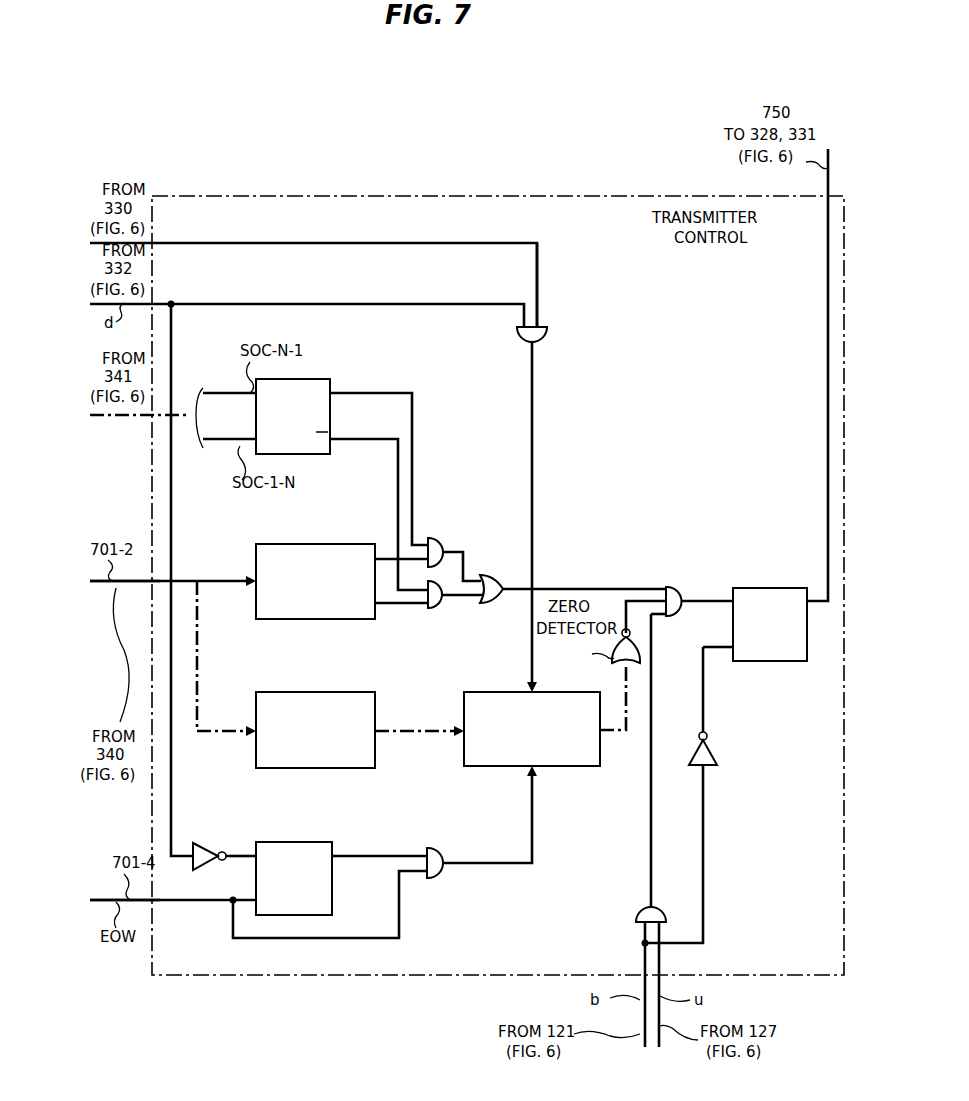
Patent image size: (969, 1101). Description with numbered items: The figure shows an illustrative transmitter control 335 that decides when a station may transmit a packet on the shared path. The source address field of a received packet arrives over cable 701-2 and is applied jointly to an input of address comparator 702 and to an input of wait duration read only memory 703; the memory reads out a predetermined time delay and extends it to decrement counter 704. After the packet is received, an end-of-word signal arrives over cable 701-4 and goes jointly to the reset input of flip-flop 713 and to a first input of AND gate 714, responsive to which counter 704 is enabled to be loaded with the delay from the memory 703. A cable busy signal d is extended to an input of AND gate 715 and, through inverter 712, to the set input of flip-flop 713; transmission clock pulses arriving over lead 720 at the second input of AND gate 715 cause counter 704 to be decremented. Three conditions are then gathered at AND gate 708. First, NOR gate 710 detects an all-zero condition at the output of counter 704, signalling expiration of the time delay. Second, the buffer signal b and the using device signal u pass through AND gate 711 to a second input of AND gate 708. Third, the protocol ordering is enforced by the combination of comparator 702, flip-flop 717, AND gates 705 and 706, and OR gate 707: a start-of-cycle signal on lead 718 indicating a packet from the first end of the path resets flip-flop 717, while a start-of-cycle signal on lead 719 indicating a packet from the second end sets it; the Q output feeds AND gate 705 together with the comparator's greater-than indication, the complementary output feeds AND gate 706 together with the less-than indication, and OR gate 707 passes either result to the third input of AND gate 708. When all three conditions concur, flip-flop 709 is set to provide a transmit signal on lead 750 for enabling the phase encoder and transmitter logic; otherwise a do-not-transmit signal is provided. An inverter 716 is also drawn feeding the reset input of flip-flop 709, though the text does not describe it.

The transmitter control 335 is at (565, 196).
The lead 750 is at (795, 352).
The lead 720 is at (538, 292).
The AND gate 715 is at (547, 336).
The flip-flop 717 is at (326, 380).
The lead 719 is at (215, 394).
The lead 718 is at (215, 442).
The address comparator 702 is at (316, 544).
The AND gate 705 is at (436, 538).
The AND gate 706 is at (438, 608).
The OR gate 707 is at (490, 576).
The AND gate 708 is at (682, 590).
The flip-flop 709 is at (768, 588).
The NOR gate 710 is at (614, 648).
The wait duration read only memory 703 is at (316, 692).
The decrement counter 704 is at (511, 692).
The inverter 712 is at (210, 846).
The flip-flop 713 is at (294, 845).
The AND gate 714 is at (438, 853).
The inverter 716 is at (710, 748).
The AND gate 711 is at (642, 908).
The cable 701-2 is at (125, 561).
The cable 701-4 is at (125, 877).